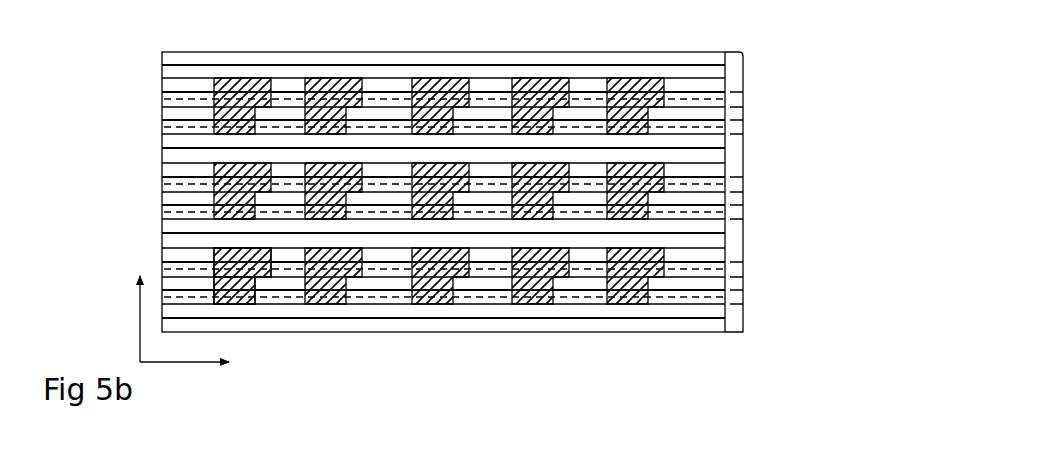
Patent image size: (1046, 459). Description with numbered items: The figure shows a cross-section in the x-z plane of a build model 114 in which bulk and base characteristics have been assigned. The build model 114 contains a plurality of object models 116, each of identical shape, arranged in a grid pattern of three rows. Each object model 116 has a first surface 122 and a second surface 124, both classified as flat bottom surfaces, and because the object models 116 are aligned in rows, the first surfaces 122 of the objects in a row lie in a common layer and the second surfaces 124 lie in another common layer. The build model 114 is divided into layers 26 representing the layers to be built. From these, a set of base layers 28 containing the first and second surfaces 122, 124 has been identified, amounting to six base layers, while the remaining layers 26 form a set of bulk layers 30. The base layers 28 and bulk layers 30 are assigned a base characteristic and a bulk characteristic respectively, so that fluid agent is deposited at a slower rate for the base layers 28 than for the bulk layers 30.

The build model 114 is at (136, 46).
The layers 26 is at (162, 105).
The base layers 28 is at (743, 127).
The bulk layers 30 is at (743, 115).
The object models 116 is at (648, 254).
The first surface 122 is at (235, 304).
The second surface 124 is at (266, 277).